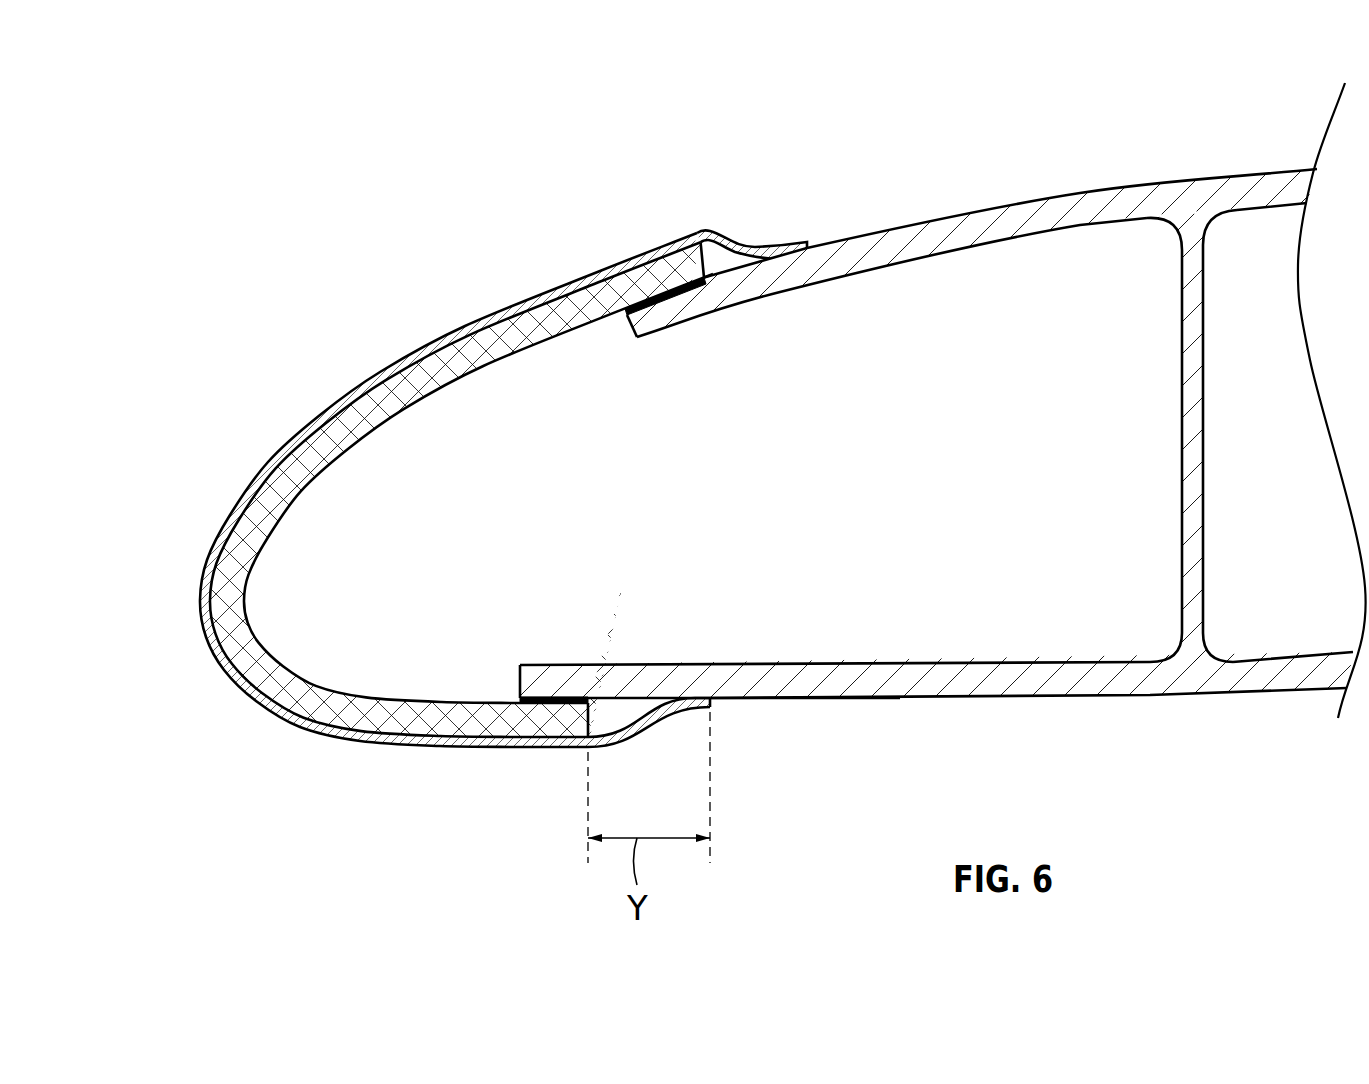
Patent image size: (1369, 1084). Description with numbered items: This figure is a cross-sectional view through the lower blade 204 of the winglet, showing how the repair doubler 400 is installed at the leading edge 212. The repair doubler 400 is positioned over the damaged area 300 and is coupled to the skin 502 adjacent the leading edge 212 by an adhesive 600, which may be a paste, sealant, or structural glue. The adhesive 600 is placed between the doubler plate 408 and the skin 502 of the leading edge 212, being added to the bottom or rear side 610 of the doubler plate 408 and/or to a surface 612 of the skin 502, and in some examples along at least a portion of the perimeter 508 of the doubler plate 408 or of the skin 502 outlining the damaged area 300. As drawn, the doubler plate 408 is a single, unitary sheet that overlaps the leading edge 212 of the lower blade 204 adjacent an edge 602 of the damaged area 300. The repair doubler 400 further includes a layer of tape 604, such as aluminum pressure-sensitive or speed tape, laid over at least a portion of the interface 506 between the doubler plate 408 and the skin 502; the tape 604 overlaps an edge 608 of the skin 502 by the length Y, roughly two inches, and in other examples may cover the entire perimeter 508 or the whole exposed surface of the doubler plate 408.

The lower blade 204 is at (240, 202).
The repair doubler 400 is at (170, 437).
The leading edge 212 is at (700, 307).
The damaged area 300 is at (590, 365).
The doubler plate 408 is at (462, 362).
The skin 502 is at (990, 207).
The interface 506 is at (622, 702).
The perimeter 508 is at (532, 713).
The adhesive 600 is at (704, 282).
The edge 602 is at (640, 288).
The layer of tape 604 is at (583, 277).
The edge of the skin 608 is at (592, 677).
The bottom or rear side 610 is at (603, 313).
The surface of the skin 612 is at (733, 268).